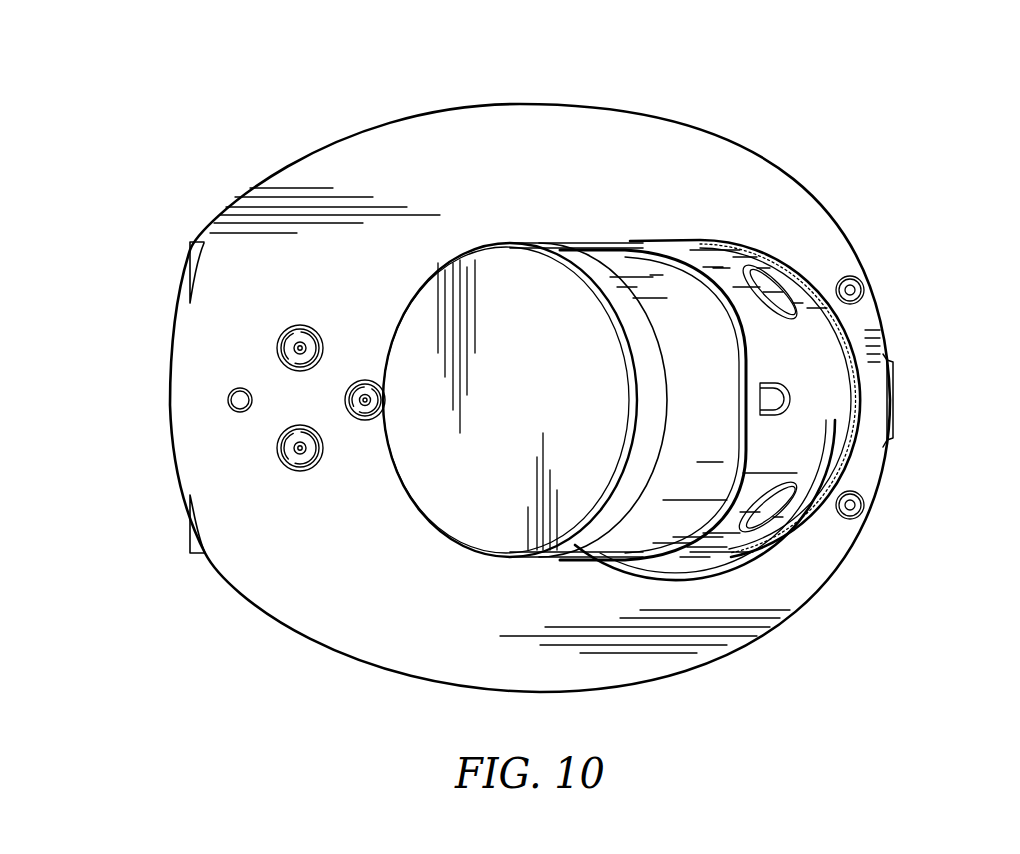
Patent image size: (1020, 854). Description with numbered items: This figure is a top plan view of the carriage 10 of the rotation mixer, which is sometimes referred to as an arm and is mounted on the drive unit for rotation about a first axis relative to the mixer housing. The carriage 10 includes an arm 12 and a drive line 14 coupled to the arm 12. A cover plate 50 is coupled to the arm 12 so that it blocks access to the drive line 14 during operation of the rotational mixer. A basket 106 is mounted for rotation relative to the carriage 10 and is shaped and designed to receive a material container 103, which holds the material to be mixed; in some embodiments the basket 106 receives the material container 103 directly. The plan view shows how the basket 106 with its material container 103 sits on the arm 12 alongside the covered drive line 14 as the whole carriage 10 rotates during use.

The carriage 10 is at (147, 160).
The arm 12 is at (389, 250).
The drive line 14 is at (183, 565).
The cover plate 50 is at (371, 597).
The material container 103 is at (491, 232).
The basket 106 is at (692, 228).